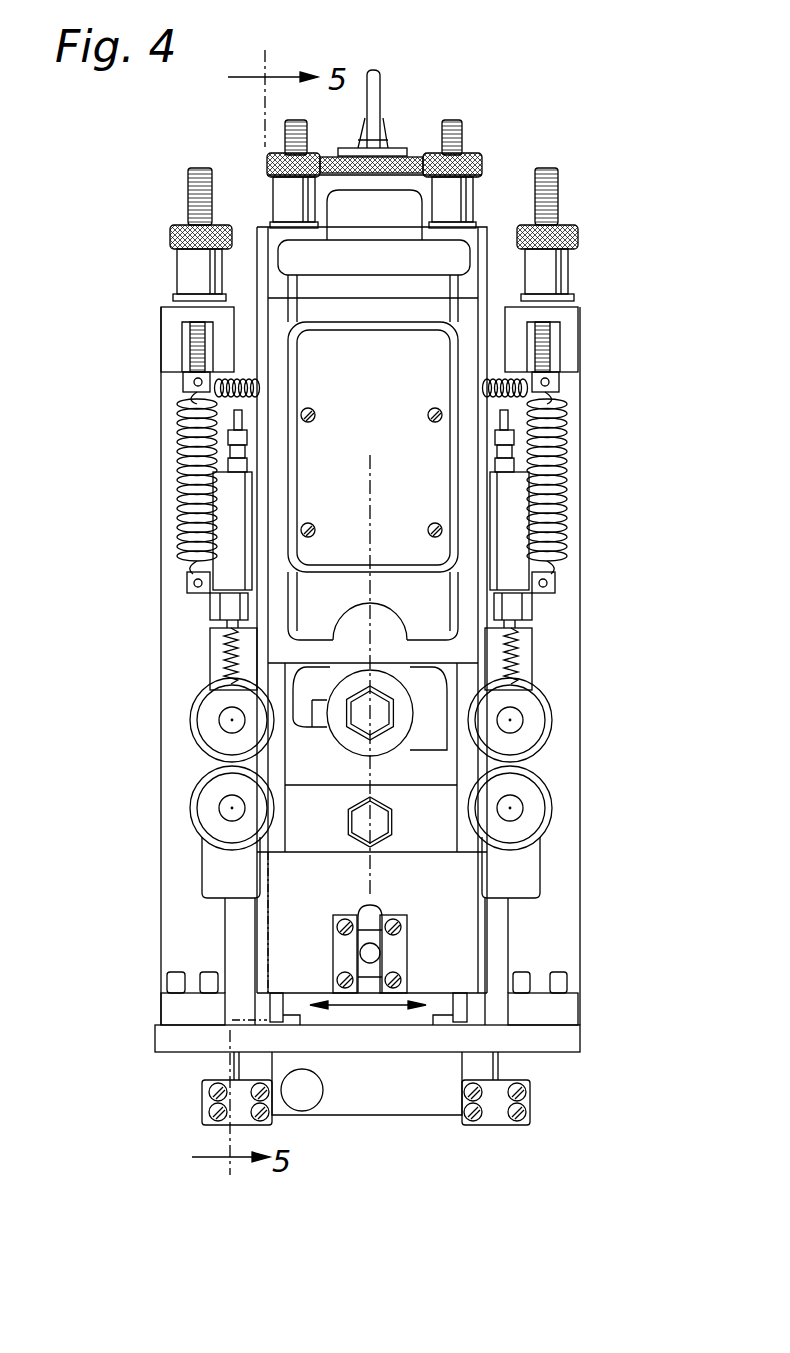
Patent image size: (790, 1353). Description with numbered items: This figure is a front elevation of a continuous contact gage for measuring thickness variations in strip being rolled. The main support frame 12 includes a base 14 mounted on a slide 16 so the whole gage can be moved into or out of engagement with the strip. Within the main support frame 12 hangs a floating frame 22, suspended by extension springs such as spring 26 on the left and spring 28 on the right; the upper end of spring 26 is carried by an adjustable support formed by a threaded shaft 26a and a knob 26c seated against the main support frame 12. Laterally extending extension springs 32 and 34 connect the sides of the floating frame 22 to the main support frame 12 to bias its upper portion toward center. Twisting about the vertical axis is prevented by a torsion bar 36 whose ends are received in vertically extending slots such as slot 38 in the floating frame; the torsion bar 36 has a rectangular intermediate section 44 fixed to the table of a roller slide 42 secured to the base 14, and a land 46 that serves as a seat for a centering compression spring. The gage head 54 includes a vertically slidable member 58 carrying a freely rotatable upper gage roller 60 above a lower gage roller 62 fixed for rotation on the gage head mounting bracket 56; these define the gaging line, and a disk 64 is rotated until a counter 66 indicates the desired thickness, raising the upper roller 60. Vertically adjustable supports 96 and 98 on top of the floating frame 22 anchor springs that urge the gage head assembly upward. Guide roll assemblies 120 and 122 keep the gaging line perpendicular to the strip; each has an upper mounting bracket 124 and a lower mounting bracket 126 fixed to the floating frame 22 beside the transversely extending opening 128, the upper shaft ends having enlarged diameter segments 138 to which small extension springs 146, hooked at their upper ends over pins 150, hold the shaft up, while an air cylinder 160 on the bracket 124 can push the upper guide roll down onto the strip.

The main support frame 12 is at (588, 604).
The base 14 is at (567, 1046).
The slide 16 is at (408, 1098).
The floating frame 22 is at (372, 570).
The extension spring 26 is at (180, 517).
The threaded shaft 26a is at (194, 197).
The knob 26c is at (190, 265).
The extension spring 28 is at (557, 448).
The laterally extending extension spring 32 is at (180, 420).
The laterally extending extension spring 34 is at (540, 375).
The torsion bar 36 is at (372, 953).
The vertically extending slot 38 is at (373, 907).
The roller slide 42 is at (296, 1003).
The intermediate section 44 is at (401, 982).
The land 46 is at (401, 925).
The gage head 54 is at (384, 466).
The gage head mounting bracket 56 is at (322, 831).
The vertically slidable member 58 is at (402, 675).
The upper gage roller 60 is at (383, 752).
The lower gage roller 62 is at (387, 780).
The disk 64 is at (413, 160).
The counter 66 is at (397, 150).
The vertically adjustable support 96 is at (306, 150).
The vertically adjustable support 98 is at (462, 130).
The guide roll assembly 120 is at (142, 775).
The guide roll assembly 122 is at (548, 773).
The mounting bracket 124 is at (218, 652).
The mounting bracket 126 is at (213, 862).
The transversely extending opening 128 is at (430, 851).
The enlarged diameter segment 138 is at (200, 720).
The small extension spring 146 is at (224, 677).
The pin 150 is at (210, 633).
The air cylinder 160 is at (228, 533).